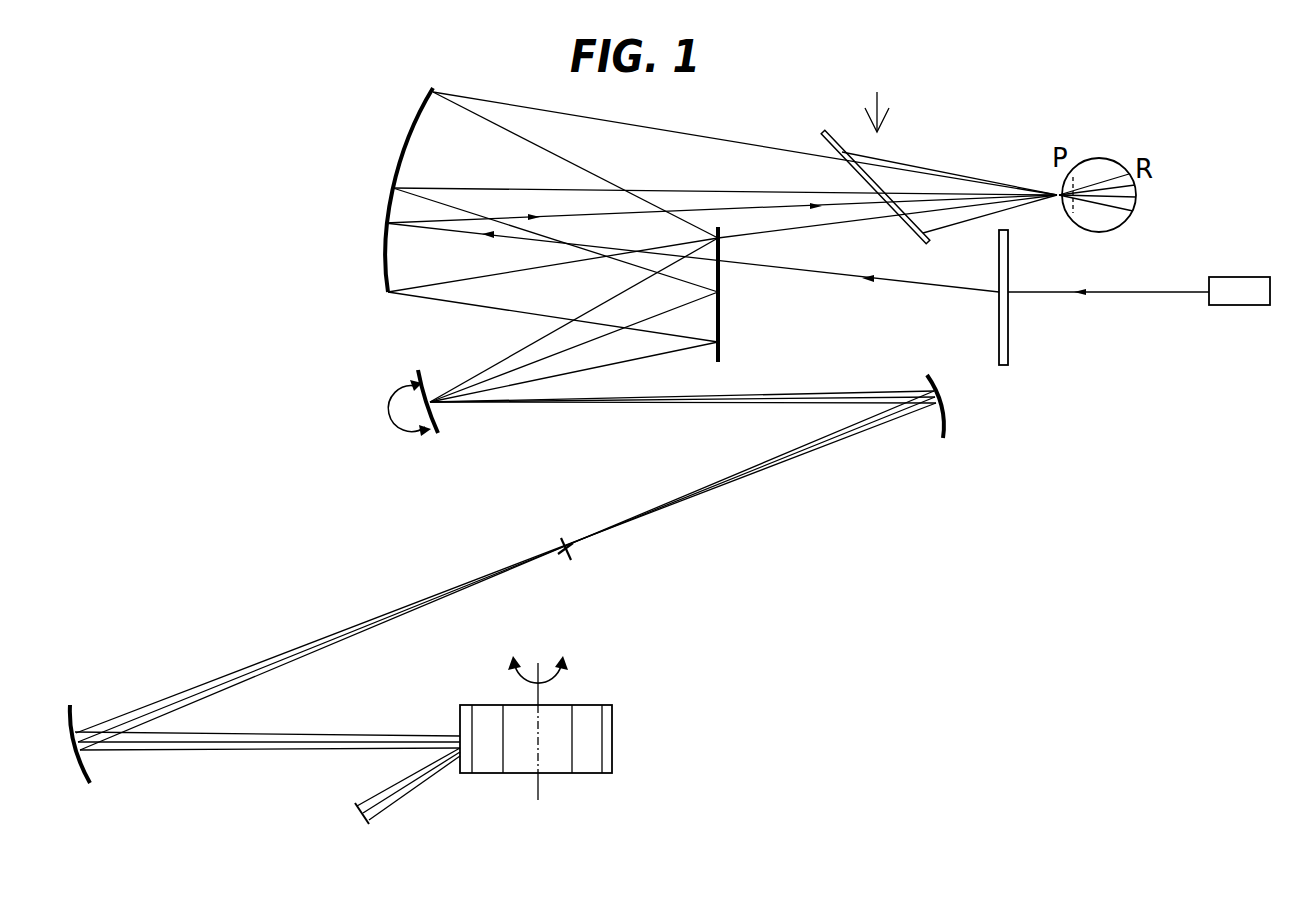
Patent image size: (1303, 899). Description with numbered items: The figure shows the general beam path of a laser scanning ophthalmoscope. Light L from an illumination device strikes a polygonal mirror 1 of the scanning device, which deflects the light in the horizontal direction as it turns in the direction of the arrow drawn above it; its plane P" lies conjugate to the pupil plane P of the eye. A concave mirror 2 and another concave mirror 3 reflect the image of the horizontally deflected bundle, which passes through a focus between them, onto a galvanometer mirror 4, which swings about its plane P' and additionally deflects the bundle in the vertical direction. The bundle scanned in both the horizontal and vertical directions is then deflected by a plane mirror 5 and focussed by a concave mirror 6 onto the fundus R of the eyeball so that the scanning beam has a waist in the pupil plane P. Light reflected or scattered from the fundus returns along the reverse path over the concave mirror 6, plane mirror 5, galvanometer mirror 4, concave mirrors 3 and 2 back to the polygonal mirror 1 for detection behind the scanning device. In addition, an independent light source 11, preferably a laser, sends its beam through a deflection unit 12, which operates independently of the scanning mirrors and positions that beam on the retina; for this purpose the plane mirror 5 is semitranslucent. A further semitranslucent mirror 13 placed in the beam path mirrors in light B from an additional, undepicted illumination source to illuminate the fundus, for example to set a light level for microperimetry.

The polygonal mirror 1 is at (612, 755).
The concave mirror 2 is at (80, 762).
The concave mirror 3 is at (943, 438).
The galvanometer mirror 4 is at (418, 370).
The plane mirror 5 is at (722, 343).
The concave mirror 6 is at (383, 245).
The independent source of light 11 is at (1265, 305).
The deflection unit 12 is at (1008, 357).
The semitranslucent mirror 13 is at (823, 132).